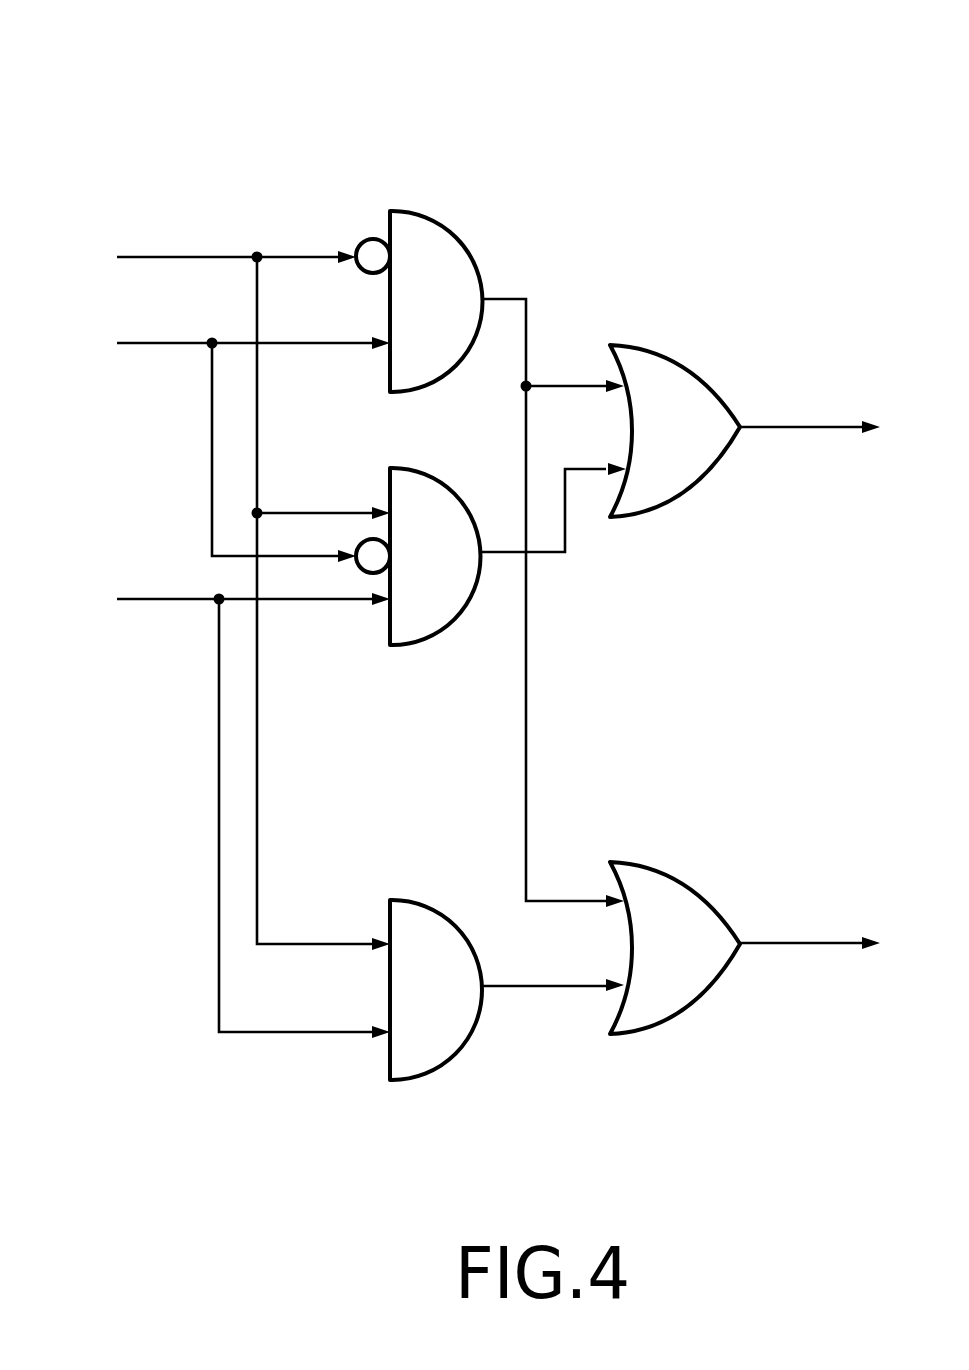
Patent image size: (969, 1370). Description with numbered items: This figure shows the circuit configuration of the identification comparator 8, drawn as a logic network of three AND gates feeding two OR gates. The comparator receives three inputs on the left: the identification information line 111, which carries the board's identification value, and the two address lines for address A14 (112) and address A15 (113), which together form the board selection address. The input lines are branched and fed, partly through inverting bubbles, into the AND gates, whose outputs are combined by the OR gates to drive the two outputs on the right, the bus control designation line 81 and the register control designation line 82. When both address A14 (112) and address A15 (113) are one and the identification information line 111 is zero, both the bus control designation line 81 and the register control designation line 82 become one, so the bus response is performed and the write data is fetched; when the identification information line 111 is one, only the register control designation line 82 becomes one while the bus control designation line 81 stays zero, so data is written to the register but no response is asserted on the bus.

The identification comparator 8 is at (208, 45).
The identification information line 111 is at (152, 257).
The address A14 112 is at (152, 343).
The address A15 113 is at (152, 599).
The bus control designation line 81 is at (797, 427).
The register control designation line 82 is at (797, 943).